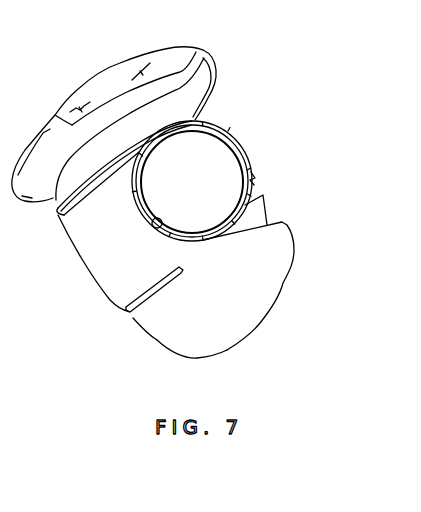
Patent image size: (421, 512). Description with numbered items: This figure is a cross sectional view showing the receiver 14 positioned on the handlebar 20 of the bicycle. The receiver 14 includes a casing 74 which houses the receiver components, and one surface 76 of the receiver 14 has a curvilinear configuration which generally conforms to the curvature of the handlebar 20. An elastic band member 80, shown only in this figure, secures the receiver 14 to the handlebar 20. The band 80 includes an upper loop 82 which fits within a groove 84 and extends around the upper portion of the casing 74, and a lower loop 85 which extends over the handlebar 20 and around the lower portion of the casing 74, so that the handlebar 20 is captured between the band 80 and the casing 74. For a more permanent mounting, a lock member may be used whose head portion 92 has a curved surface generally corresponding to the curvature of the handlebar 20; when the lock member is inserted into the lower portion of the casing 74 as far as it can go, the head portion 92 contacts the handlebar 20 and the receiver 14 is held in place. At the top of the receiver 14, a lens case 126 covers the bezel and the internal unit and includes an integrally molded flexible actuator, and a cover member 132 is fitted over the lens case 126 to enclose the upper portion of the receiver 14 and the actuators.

The receiver 14 is at (247, 332).
The handlebar 20 is at (233, 137).
The casing 74 is at (180, 356).
The surface 76 is at (151, 224).
The elastic band member 80 is at (253, 168).
The upper loop 82 is at (57, 216).
The groove 84 is at (195, 120).
The lower loop 85 is at (156, 297).
The head portion 92 is at (267, 198).
The lens case 126 is at (143, 55).
The cover member 132 is at (213, 62).